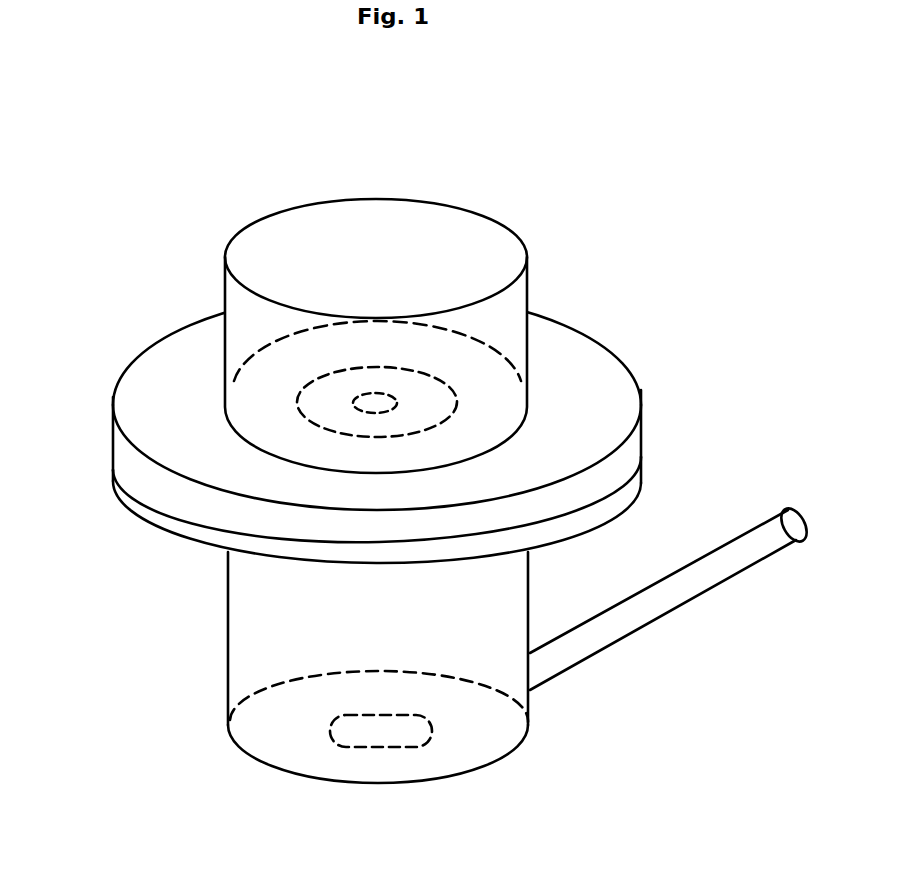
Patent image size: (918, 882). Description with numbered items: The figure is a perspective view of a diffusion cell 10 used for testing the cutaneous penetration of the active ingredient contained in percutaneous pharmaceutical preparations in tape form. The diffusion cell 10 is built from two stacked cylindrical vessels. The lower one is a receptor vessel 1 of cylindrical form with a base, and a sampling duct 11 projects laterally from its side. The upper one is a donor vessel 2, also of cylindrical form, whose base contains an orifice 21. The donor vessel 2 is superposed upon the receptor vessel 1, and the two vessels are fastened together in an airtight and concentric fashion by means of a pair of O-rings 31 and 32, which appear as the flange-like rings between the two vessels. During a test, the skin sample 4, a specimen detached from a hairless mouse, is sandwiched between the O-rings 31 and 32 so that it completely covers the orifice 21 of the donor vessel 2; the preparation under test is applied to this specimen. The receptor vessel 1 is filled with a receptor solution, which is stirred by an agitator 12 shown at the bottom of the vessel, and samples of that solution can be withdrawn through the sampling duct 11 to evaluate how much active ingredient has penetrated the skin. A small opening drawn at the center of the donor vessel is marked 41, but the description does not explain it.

The diffusion cell 10 is at (455, 483).
The receptor vessel 1 is at (248, 642).
The sampling duct 11 is at (667, 607).
The agitator 12 is at (384, 733).
The donor vessel 2 is at (253, 313).
The orifice 21 is at (438, 400).
The O-ring 31 is at (607, 405).
The O-ring 32 is at (632, 482).
The skin sample 4 is at (322, 398).
The aperture 41 is at (385, 402).